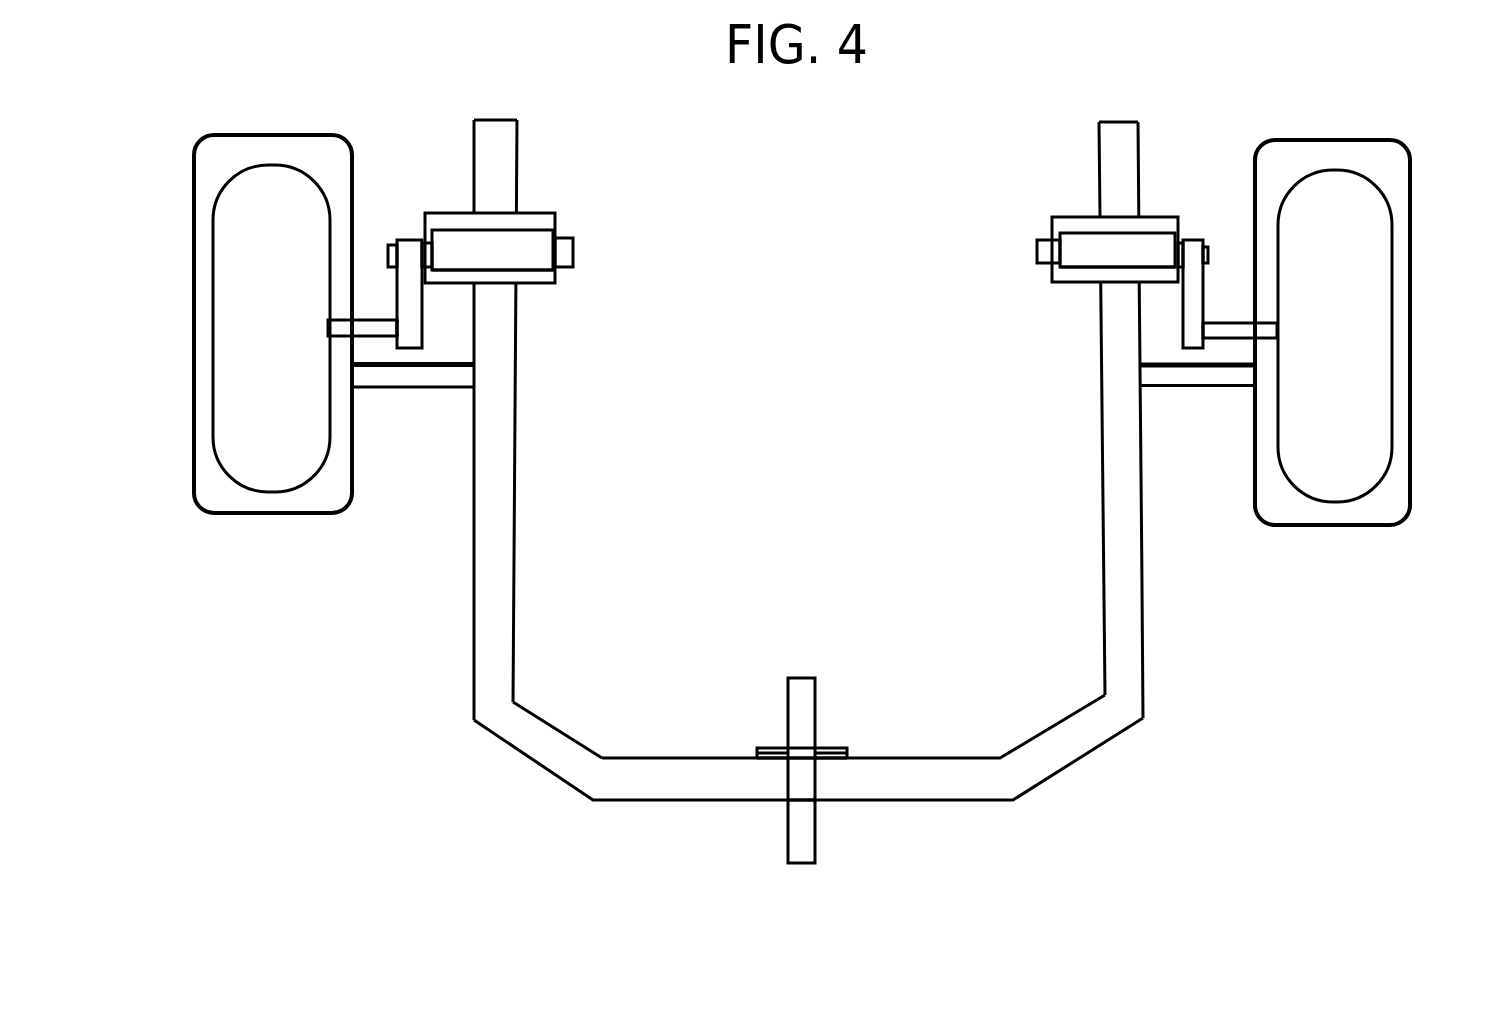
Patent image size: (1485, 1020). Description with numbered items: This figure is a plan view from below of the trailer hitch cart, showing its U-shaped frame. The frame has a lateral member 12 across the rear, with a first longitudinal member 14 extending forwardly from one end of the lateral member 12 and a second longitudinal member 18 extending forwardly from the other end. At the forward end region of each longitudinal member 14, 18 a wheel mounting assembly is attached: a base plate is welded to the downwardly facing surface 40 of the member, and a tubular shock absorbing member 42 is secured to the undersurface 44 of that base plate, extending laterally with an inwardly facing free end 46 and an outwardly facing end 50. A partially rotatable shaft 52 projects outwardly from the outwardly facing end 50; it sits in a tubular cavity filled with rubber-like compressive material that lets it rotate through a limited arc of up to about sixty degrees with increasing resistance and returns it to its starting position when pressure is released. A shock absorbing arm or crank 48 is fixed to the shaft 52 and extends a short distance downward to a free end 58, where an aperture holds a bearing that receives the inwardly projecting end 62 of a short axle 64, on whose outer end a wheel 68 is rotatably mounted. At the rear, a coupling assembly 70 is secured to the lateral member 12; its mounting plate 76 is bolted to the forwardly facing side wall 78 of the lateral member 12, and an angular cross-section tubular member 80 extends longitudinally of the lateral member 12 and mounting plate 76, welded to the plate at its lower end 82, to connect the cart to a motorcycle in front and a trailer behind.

The lateral member 12 is at (645, 803).
The first longitudinal member 14 is at (473, 608).
The second longitudinal member 18 is at (1145, 642).
The downwardly facing surface 40 is at (483, 160).
The tubular shock absorbing member 42 is at (537, 265).
The undersurface 44 is at (532, 222).
The inwardly facing free end 46 is at (538, 253).
The shock absorbing arm or crank 48 is at (427, 325).
The outwardly facing end 50 is at (385, 250).
The partially rotatable shaft 52 is at (575, 262).
The free end 58 is at (407, 347).
The inwardly projecting end 62 is at (393, 320).
The short axle 64 is at (340, 320).
The wheel 68 is at (215, 450).
The coupling assembly 70 is at (817, 718).
The mounting plate 76 is at (773, 748).
The forwardly facing side wall 78 is at (664, 758).
The angular cross-section tubular member 80 is at (810, 842).
The lower end 82 is at (790, 758).